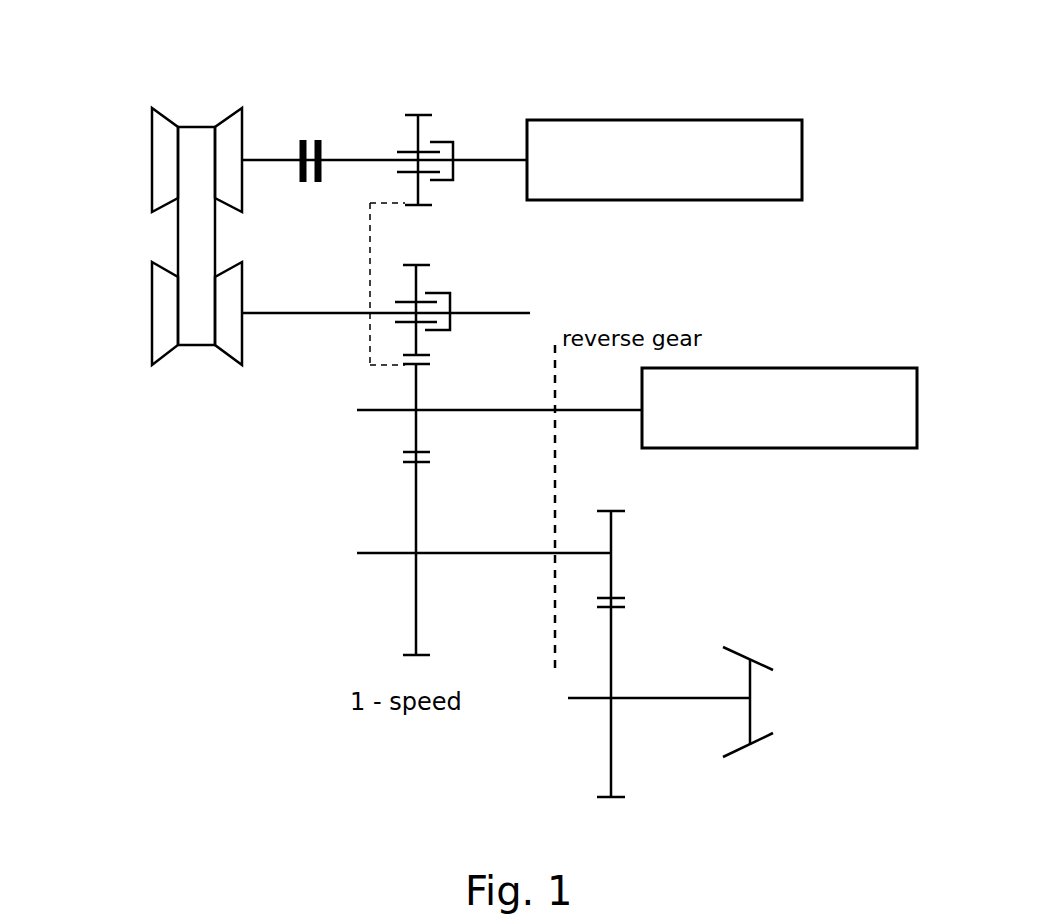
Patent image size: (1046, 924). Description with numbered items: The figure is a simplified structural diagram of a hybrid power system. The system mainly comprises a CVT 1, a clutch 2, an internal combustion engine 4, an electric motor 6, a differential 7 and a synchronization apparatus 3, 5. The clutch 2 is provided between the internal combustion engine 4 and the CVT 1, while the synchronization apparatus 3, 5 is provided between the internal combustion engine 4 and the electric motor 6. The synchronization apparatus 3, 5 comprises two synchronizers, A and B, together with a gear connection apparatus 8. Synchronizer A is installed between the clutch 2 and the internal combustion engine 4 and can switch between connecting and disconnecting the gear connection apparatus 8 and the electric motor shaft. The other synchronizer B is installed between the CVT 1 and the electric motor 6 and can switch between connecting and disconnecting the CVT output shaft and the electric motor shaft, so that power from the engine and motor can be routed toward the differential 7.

The CVT 1 is at (152, 162).
The clutch 2 is at (322, 157).
The synchronization apparatus 3 is at (432, 143).
The internal combustion engine 4 is at (803, 160).
The synchronization apparatus 5 is at (450, 312).
The electric motor 6 is at (887, 368).
The differential 7 is at (767, 667).
The gear connection apparatus 8 is at (370, 338).